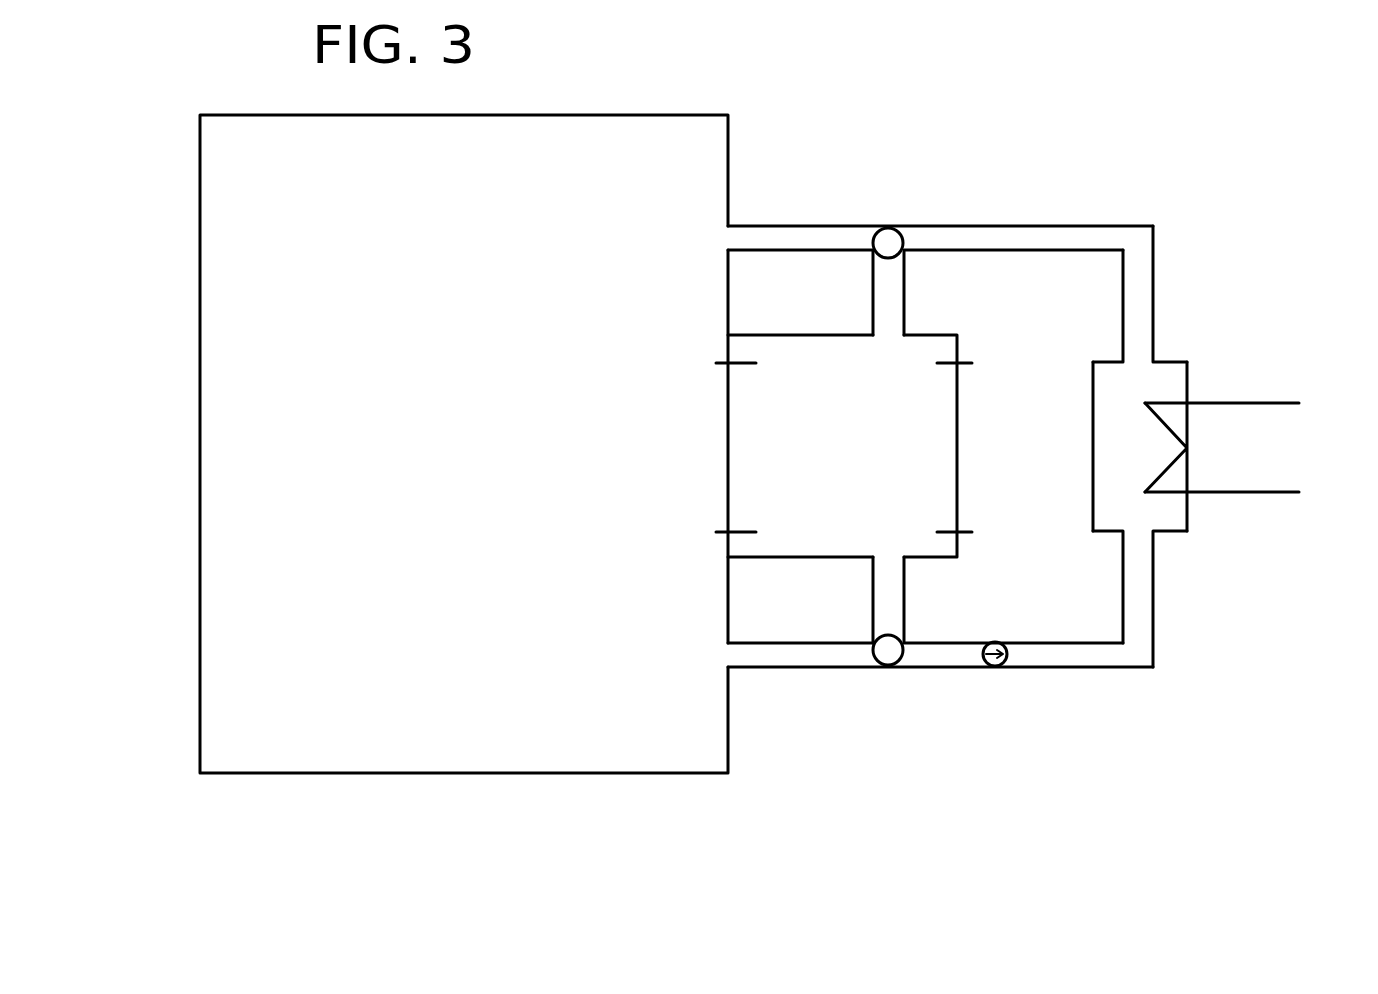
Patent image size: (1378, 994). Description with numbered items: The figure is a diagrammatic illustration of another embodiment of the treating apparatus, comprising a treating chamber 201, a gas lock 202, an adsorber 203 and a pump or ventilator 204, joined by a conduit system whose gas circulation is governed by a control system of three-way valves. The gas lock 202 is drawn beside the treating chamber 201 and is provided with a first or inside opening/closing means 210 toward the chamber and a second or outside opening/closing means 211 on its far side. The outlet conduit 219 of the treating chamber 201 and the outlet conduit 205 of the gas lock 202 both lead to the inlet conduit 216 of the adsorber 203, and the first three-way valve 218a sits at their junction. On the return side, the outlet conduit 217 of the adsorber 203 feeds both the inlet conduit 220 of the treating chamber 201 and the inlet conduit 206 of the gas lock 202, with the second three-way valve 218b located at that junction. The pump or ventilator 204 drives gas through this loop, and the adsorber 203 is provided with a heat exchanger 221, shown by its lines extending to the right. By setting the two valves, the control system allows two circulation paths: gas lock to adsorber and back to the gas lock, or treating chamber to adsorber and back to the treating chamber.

The treating chamber 201 is at (335, 745).
The gas lock 202 is at (768, 523).
The adsorber 203 is at (1140, 390).
The pump or ventilator 204 is at (1013, 665).
The outlet conduit of the gas lock 205 is at (905, 598).
The inlet conduit of the gas lock 206 is at (905, 295).
The first or inside opening/closing means 210 is at (728, 472).
The second or outside opening/closing means 211 is at (960, 418).
The inlet conduit of the adsorber 216 is at (1145, 603).
The outlet conduit of the adsorber 217 is at (1135, 350).
The first three-way valve 218a is at (888, 665).
The second three-way valve 218b is at (889, 246).
The outlet conduit of the treating chamber 219 is at (772, 655).
The inlet conduit of the treating chamber 220 is at (793, 240).
The heat exchanger 221 is at (1190, 477).